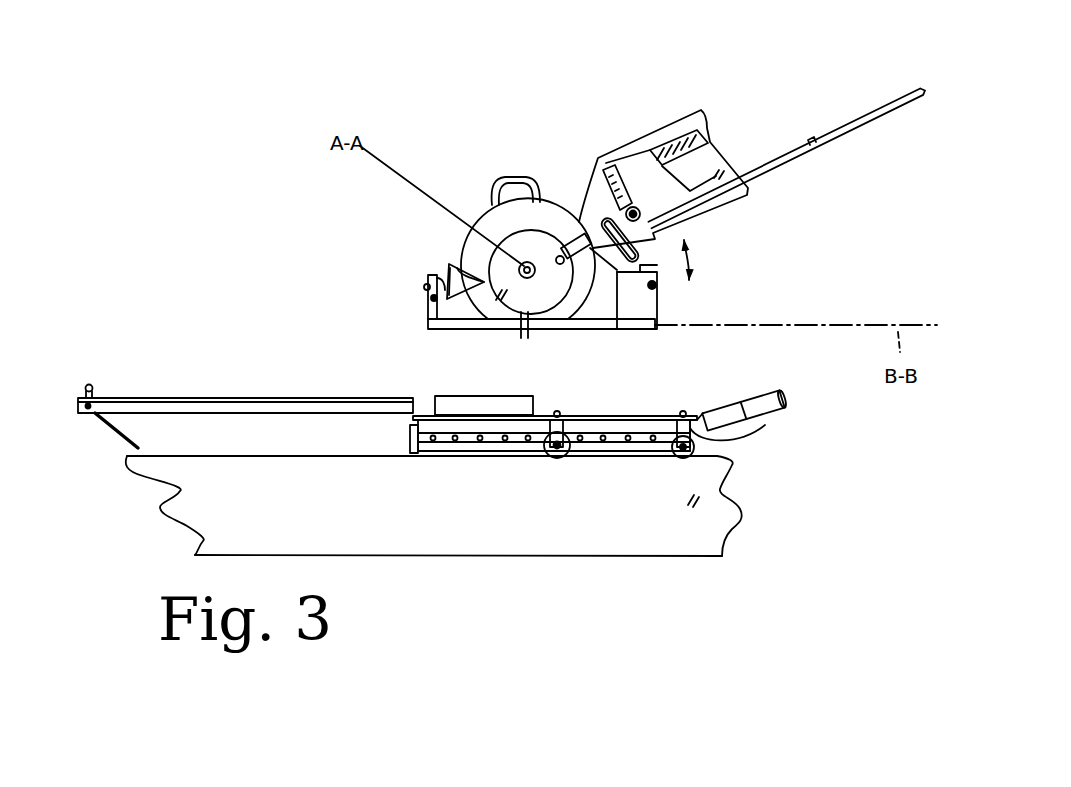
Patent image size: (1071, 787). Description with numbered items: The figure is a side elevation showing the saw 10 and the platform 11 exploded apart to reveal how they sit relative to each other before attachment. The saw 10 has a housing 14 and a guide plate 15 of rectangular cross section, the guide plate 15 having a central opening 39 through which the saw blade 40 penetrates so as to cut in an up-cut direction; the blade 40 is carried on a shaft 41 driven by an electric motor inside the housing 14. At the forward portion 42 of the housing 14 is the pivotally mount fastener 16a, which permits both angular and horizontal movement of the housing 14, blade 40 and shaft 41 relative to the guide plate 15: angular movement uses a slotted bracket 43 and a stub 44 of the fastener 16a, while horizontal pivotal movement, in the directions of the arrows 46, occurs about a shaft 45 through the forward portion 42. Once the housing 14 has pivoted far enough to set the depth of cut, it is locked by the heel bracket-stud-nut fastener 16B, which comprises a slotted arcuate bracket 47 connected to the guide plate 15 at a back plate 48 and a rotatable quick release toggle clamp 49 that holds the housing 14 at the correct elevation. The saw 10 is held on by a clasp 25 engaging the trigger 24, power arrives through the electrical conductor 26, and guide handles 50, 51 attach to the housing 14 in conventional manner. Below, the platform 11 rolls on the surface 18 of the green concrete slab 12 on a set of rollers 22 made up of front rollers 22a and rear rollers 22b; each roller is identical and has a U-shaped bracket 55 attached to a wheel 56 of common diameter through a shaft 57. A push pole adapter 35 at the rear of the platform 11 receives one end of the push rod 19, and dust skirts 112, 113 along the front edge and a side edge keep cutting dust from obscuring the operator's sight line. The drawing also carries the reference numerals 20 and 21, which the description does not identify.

The saw 10 is at (433, 68).
The platform 11 is at (118, 477).
The green concrete slab 12 is at (700, 515).
The housing 14 is at (570, 204).
The guide plate 15 is at (563, 334).
The pivotally mount fastener 16a is at (416, 298).
The heel bracket-stud-nut fastener 16B is at (662, 287).
The surface 18 is at (727, 455).
The push rod 19 is at (767, 392).
The fence 20 is at (190, 397).
The fence brace 21 is at (120, 438).
The set of rollers 22 is at (577, 451).
The front rollers 22a is at (551, 450).
The rear rollers 22b is at (740, 440).
The trigger 24 is at (655, 145).
The clasp 25 is at (678, 132).
The electrical conductor 26 is at (812, 160).
The push pole adapter 35 is at (703, 398).
The central opening 39 is at (468, 330).
The saw blade 40 is at (499, 300).
The shaft 41 is at (457, 268).
The forward portion 42 is at (450, 268).
The slotted bracket 43 is at (430, 276).
The stub 44 is at (426, 287).
The shaft 45 is at (436, 330).
The arrows 46 is at (697, 253).
The slotted arcuate bracket 47 is at (618, 300).
The back plate 48 is at (657, 314).
The rotatable quick release toggle clamp 49 is at (648, 206).
The guide handle 50 is at (497, 182).
The guide handle 51 is at (715, 163).
The U-shaped bracket 55 is at (685, 452).
The wheel 56 is at (566, 452).
The shaft 57 is at (560, 452).
The dust skirt 112 is at (405, 438).
The dust skirt 113 is at (465, 449).